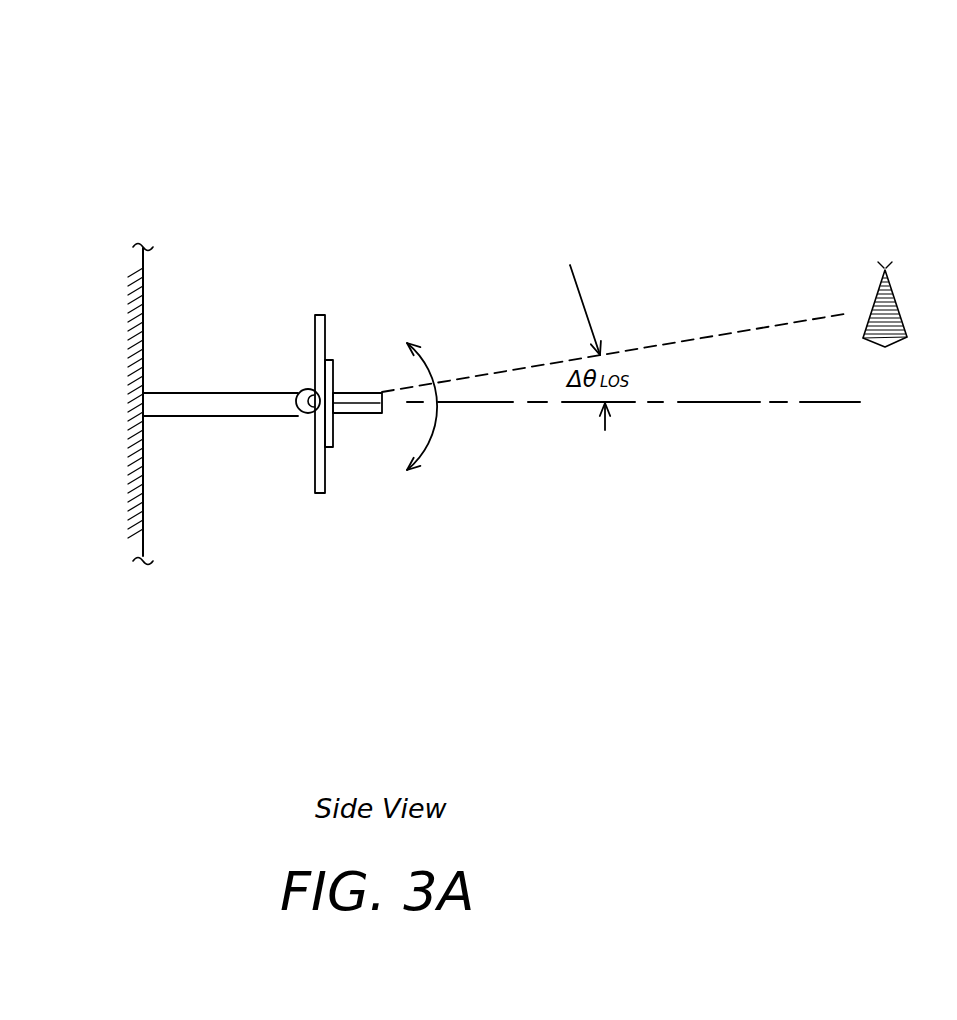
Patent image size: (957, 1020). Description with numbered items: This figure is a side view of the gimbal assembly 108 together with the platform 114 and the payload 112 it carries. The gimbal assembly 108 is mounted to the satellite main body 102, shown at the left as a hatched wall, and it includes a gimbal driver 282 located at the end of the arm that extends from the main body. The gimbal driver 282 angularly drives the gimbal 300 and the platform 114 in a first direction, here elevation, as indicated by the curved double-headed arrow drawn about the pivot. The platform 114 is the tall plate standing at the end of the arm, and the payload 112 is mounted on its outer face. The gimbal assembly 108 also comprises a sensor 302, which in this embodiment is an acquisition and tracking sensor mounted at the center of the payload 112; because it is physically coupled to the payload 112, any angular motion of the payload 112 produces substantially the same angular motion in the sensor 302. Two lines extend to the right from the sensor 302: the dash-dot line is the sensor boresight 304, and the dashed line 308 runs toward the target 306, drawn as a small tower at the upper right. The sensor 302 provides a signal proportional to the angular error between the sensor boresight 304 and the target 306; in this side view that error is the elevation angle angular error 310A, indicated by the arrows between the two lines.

The satellite main body 102 is at (143, 327).
The gimbal assembly 108 is at (318, 442).
The gimbal driver 282 is at (305, 388).
The gimbal 300 is at (310, 390).
The platform 114 is at (318, 483).
The payload 112 is at (333, 373).
The sensor 302 is at (355, 415).
The line of sight 308 is at (795, 322).
The sensor boresight 304 is at (680, 402).
The target 306 is at (870, 302).
The elevation angle angular error 310A is at (657, 377).